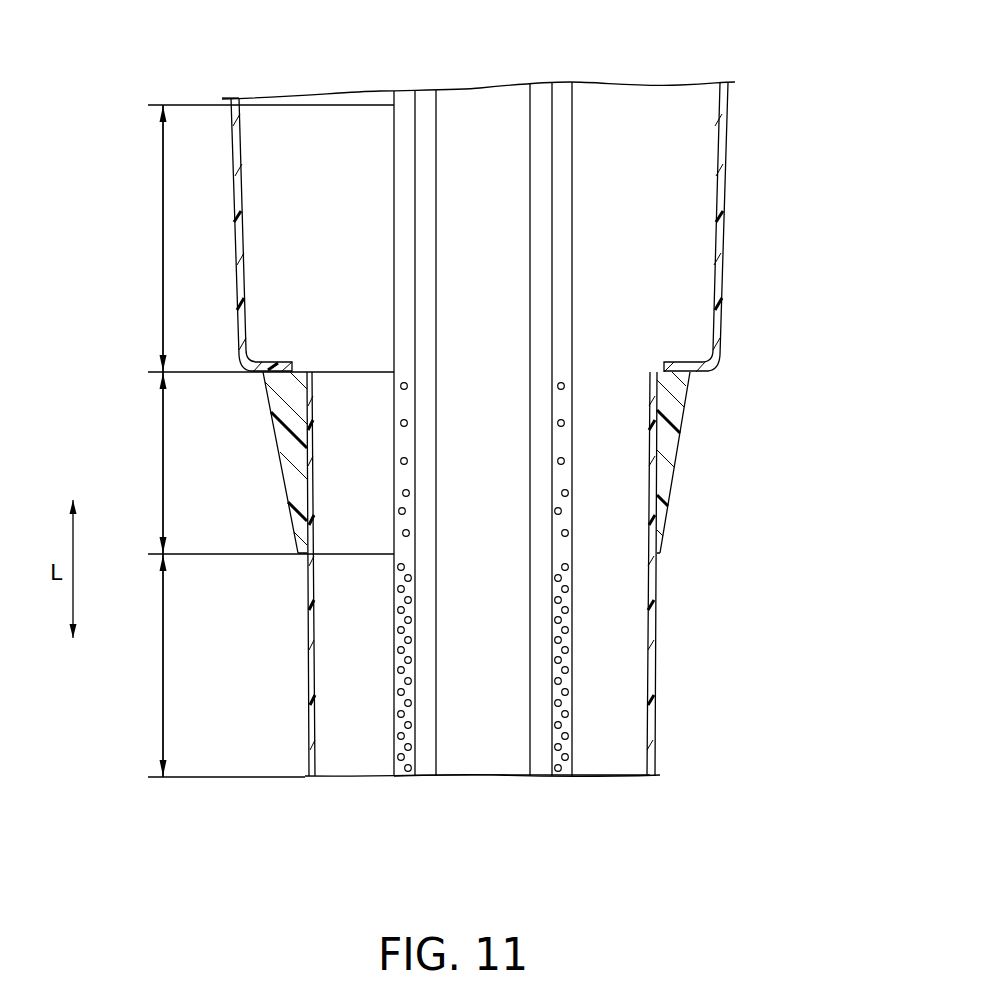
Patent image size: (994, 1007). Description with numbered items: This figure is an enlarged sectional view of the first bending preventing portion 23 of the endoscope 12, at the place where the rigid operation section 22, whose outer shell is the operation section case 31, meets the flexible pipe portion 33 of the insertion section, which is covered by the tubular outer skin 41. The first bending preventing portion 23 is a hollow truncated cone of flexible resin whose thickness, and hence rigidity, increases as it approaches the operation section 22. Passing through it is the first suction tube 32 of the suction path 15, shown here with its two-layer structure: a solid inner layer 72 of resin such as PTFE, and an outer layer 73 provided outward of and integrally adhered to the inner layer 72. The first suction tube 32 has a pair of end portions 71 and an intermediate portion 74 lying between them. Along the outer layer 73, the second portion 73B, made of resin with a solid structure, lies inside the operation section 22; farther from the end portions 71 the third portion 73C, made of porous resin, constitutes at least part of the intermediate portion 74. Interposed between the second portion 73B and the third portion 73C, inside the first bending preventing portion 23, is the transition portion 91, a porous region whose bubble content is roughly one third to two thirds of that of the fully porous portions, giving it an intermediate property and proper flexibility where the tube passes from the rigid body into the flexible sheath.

The endoscope 12 is at (744, 53).
The suction path 15 is at (480, 100).
The operation section 22 is at (752, 140).
The first bending preventing portion 23 is at (278, 447).
The operation section case 31 is at (244, 190).
The first suction tube 32 is at (495, 763).
The pipe portion 33 is at (702, 652).
The outer skin 41 is at (306, 722).
The end portions 71 is at (604, 54).
The inner layer 72 is at (538, 276).
The outer layer 73 is at (404, 100).
The intermediate portion 74 is at (607, 756).
The second portions 73B is at (136, 238).
The transition portion 91 is at (144, 463).
The third portion 73C is at (136, 665).